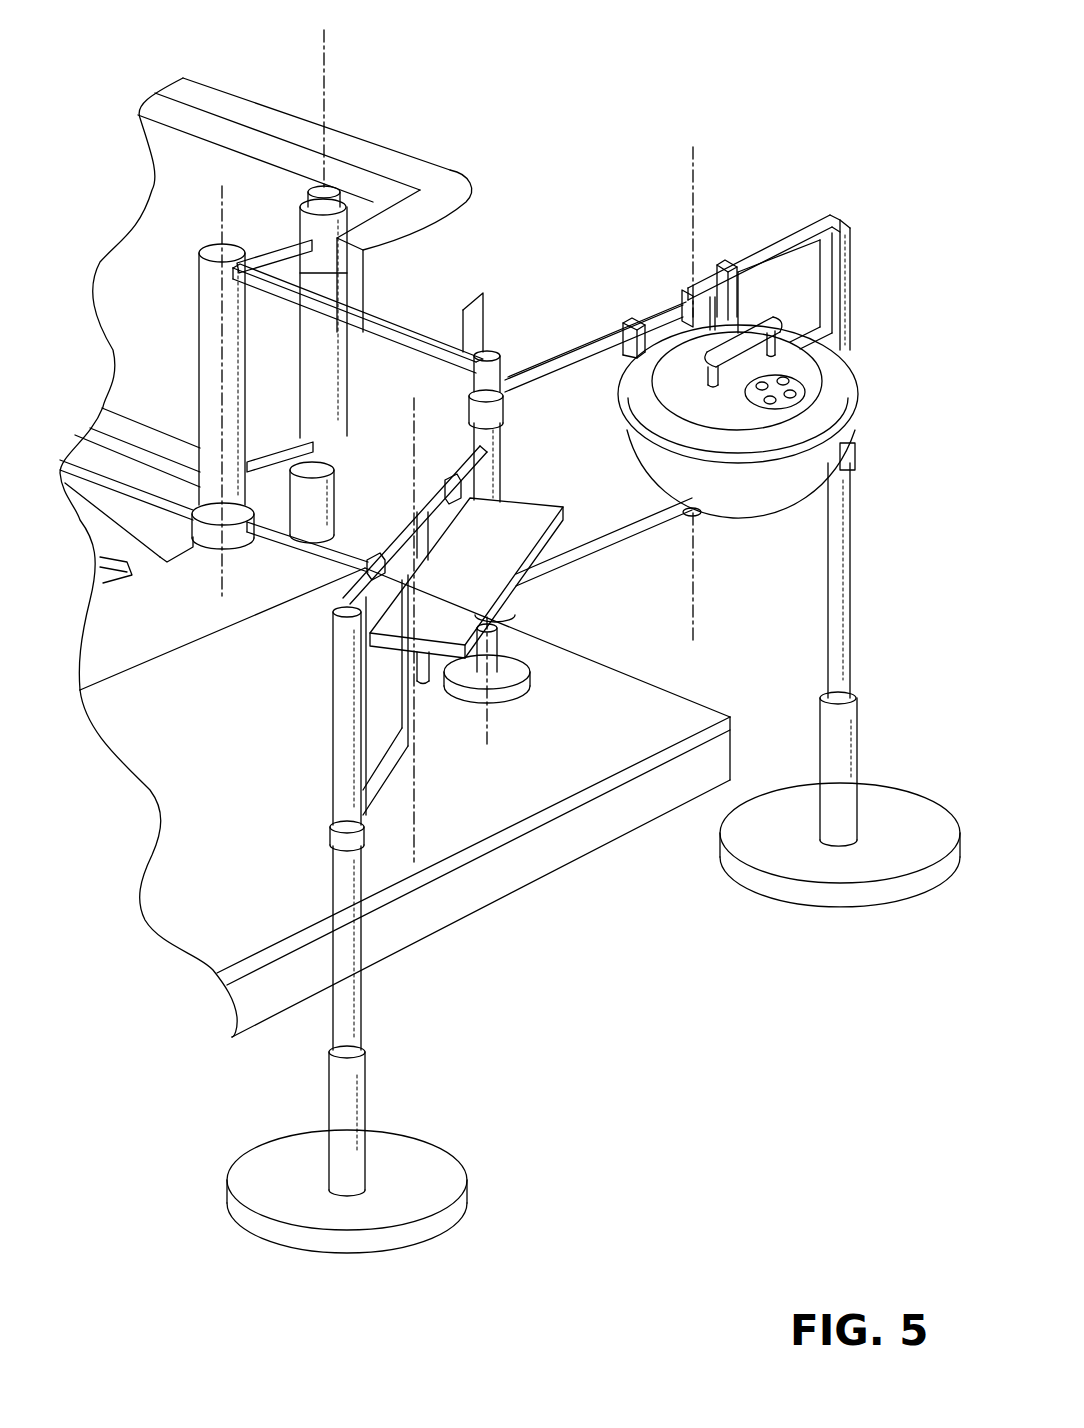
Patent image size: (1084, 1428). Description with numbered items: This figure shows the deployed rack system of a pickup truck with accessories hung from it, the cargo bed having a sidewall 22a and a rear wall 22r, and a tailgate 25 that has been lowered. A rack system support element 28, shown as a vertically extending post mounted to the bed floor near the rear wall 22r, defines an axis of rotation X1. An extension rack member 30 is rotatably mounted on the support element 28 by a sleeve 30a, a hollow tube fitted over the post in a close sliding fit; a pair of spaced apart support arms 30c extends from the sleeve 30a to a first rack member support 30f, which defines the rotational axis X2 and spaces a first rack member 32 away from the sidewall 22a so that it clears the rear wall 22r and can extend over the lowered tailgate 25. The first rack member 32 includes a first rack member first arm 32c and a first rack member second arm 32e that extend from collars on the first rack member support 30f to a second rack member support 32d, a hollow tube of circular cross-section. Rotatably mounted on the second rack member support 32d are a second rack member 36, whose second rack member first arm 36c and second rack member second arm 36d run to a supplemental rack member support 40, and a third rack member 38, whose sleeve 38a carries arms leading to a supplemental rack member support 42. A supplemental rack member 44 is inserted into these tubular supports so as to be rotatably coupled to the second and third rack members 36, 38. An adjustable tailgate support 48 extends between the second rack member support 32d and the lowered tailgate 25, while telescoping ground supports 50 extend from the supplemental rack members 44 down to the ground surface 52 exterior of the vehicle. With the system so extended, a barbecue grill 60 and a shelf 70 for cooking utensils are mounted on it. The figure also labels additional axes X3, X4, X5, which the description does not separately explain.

The sidewall 22a is at (363, 158).
The rear wall 22r is at (377, 227).
The tailgate 25 is at (620, 812).
The rack system support element 28 is at (328, 188).
The extension rack member 30 is at (259, 257).
The sleeve 30a is at (323, 278).
The support arms 30c is at (300, 273).
The first rack member support 30f is at (210, 418).
The first rack member 32 is at (199, 358).
The first rack member first arm 32c is at (486, 352).
The second rack member support 32d is at (500, 390).
The first rack member second arm 32e is at (272, 553).
The second rack member 36 is at (537, 372).
The second rack member first arm 36c is at (603, 336).
The second rack member second arm 36d is at (633, 528).
The third rack member 38 is at (432, 493).
The sleeve 38a is at (498, 477).
The supplemental rack member support 40 is at (693, 516).
The supplemental rack member support 42 is at (423, 686).
The supplemental rack member 44 is at (808, 216).
The tailgate support 48 is at (513, 665).
The ground support 50 is at (857, 562).
The ground surface 52 is at (657, 1145).
The barbecue grill 60 is at (817, 405).
The shelf 70 is at (507, 542).
The axis of rotation X1 is at (322, 40).
The rotational axis X2 is at (222, 192).
The axis X3 is at (490, 708).
The axis X4 is at (413, 430).
The axis X5 is at (693, 195).